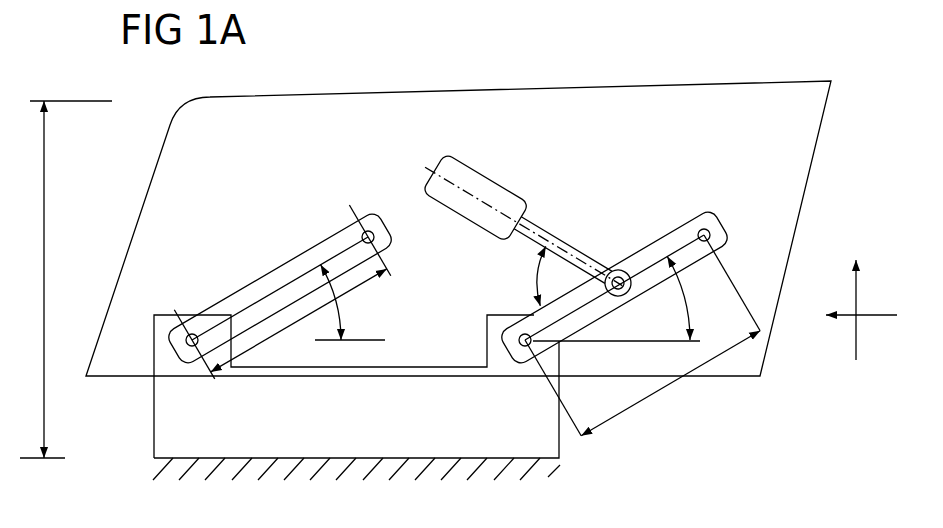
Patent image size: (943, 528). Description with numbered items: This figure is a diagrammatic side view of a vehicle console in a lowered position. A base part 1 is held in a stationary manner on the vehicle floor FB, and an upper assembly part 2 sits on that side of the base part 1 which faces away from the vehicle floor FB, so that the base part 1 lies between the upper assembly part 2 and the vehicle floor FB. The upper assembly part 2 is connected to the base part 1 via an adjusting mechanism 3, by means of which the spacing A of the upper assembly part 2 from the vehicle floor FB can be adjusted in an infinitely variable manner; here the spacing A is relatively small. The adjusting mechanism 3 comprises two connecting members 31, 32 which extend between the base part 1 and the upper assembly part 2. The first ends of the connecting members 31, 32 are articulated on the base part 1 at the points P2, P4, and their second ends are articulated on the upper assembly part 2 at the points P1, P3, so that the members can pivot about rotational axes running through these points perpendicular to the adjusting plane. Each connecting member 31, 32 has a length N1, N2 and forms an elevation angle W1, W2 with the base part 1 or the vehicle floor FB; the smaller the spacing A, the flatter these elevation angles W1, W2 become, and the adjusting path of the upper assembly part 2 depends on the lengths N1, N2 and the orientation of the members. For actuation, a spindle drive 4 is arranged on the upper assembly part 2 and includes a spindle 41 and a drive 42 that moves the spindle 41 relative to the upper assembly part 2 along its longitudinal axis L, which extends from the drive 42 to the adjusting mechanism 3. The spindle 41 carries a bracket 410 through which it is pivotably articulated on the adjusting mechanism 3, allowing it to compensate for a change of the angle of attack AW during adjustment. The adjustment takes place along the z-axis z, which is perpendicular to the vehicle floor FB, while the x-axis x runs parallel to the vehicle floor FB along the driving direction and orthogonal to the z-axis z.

The base part 1 is at (380, 462).
The upper assembly part 2 is at (403, 105).
The adjusting mechanism 3 is at (263, 225).
The spindle drive 4 is at (473, 233).
The connecting member 31 is at (661, 268).
The connecting member 32 is at (313, 258).
The spindle 41 is at (545, 235).
The drive 42 is at (470, 183).
The bracket 410 is at (604, 267).
The point P1 is at (706, 228).
The point P2 is at (521, 347).
The point P3 is at (368, 231).
The point P4 is at (193, 336).
The longitudinal axis L is at (432, 171).
The spacing A is at (65, 279).
The angle of attack AW is at (538, 277).
The elevation angle W1 is at (685, 307).
The elevation angle W2 is at (338, 313).
The length N1 is at (284, 329).
The length N2 is at (662, 388).
The vehicle floor FB is at (517, 465).
The x-axis x is at (851, 331).
The z-axis z is at (846, 308).